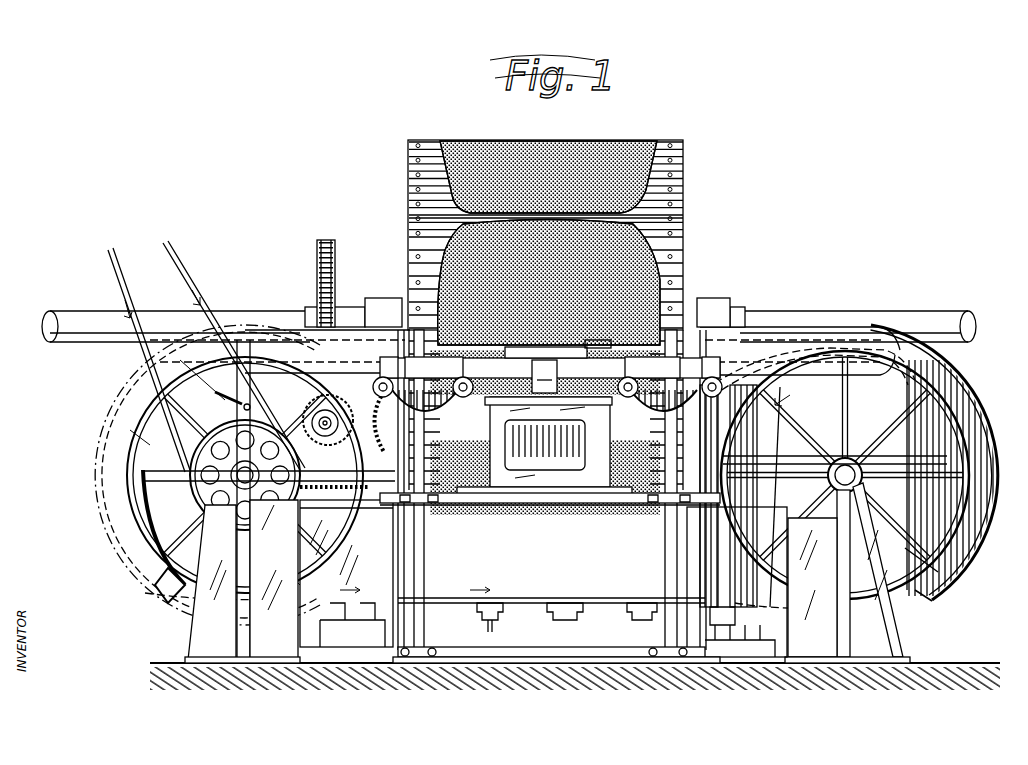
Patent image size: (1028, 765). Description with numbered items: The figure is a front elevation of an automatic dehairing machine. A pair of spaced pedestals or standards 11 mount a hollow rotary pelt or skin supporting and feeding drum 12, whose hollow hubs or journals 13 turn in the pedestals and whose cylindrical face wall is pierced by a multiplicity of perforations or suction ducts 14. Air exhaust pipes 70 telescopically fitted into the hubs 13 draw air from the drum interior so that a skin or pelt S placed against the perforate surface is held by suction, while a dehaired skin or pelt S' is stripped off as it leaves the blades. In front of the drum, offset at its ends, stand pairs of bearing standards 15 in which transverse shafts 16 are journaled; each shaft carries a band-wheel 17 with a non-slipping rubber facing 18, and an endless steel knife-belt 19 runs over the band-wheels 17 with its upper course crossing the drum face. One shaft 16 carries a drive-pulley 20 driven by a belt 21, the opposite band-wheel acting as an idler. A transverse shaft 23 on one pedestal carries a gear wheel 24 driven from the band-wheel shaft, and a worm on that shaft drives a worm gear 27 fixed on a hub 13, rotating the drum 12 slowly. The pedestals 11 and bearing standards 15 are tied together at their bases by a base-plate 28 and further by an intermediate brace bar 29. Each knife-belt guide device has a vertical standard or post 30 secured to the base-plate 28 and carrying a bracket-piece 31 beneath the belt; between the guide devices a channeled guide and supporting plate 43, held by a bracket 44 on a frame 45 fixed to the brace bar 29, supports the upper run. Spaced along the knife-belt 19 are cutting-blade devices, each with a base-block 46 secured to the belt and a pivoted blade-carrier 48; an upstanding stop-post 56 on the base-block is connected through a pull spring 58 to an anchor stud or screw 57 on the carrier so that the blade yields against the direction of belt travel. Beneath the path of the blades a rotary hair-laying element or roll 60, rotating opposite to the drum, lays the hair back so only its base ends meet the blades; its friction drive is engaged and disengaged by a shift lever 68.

The dehaired skin or pelt S' is at (575, 229).
The skin or pelt S is at (545, 453).
The pedestals or standards 11 is at (381, 298).
The pelt or skin supporting and feeding drum 12 is at (686, 152).
The hollow hubs or journals 13 is at (345, 307).
The perforations or suction ducts 14 is at (660, 216).
The bearing standards 15 is at (190, 596).
The transverse shaft 16 is at (240, 480).
The band-wheel 17 is at (890, 452).
The facing 18 is at (358, 515).
The knife-belt 19 is at (626, 350).
The drive-pulley 20 is at (186, 458).
The belt 21 is at (136, 352).
The transverse shaft 23 is at (325, 432).
The gear wheel 24 is at (248, 362).
The worm gear 27 is at (328, 242).
The base-plate 28 is at (573, 656).
The intermediate brace bar 29 is at (570, 507).
The vertical standard or post 30 is at (418, 537).
The bracket-piece 31 is at (452, 360).
The channeled guide and supporting plate 43 is at (548, 350).
The bracket 44 is at (588, 340).
The frame 45 is at (487, 512).
The base-block 46 is at (478, 348).
The blade-carrier 48 is at (541, 347).
The stop-post 56 is at (498, 348).
The anchor stud or screw 57 is at (540, 348).
The pull spring 58 is at (518, 348).
The rotary hair-laying element or roll 60 is at (612, 370).
The shift lever 68 is at (230, 402).
The air exhaust pipes 70 is at (78, 314).